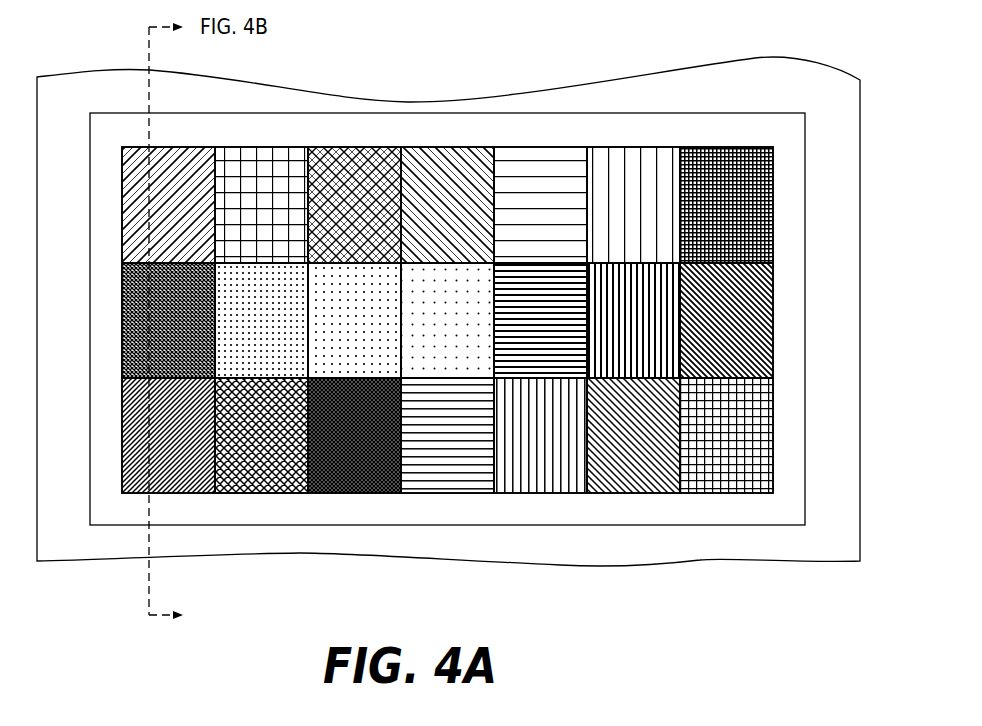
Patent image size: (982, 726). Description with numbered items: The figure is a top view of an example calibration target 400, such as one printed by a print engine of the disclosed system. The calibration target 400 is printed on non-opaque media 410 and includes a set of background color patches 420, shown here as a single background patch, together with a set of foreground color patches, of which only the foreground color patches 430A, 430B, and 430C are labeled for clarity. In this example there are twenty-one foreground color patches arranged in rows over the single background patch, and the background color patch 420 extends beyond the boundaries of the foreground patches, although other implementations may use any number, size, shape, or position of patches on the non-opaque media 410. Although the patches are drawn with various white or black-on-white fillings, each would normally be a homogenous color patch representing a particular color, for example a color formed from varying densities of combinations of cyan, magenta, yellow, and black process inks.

The calibration target 400 is at (448, 350).
The non-opaque media 410 is at (715, 543).
The background color patch 420 is at (549, 137).
The foreground color patch 430A is at (122, 439).
The foreground color patch 430B is at (122, 311).
The foreground color patch 430C is at (122, 201).